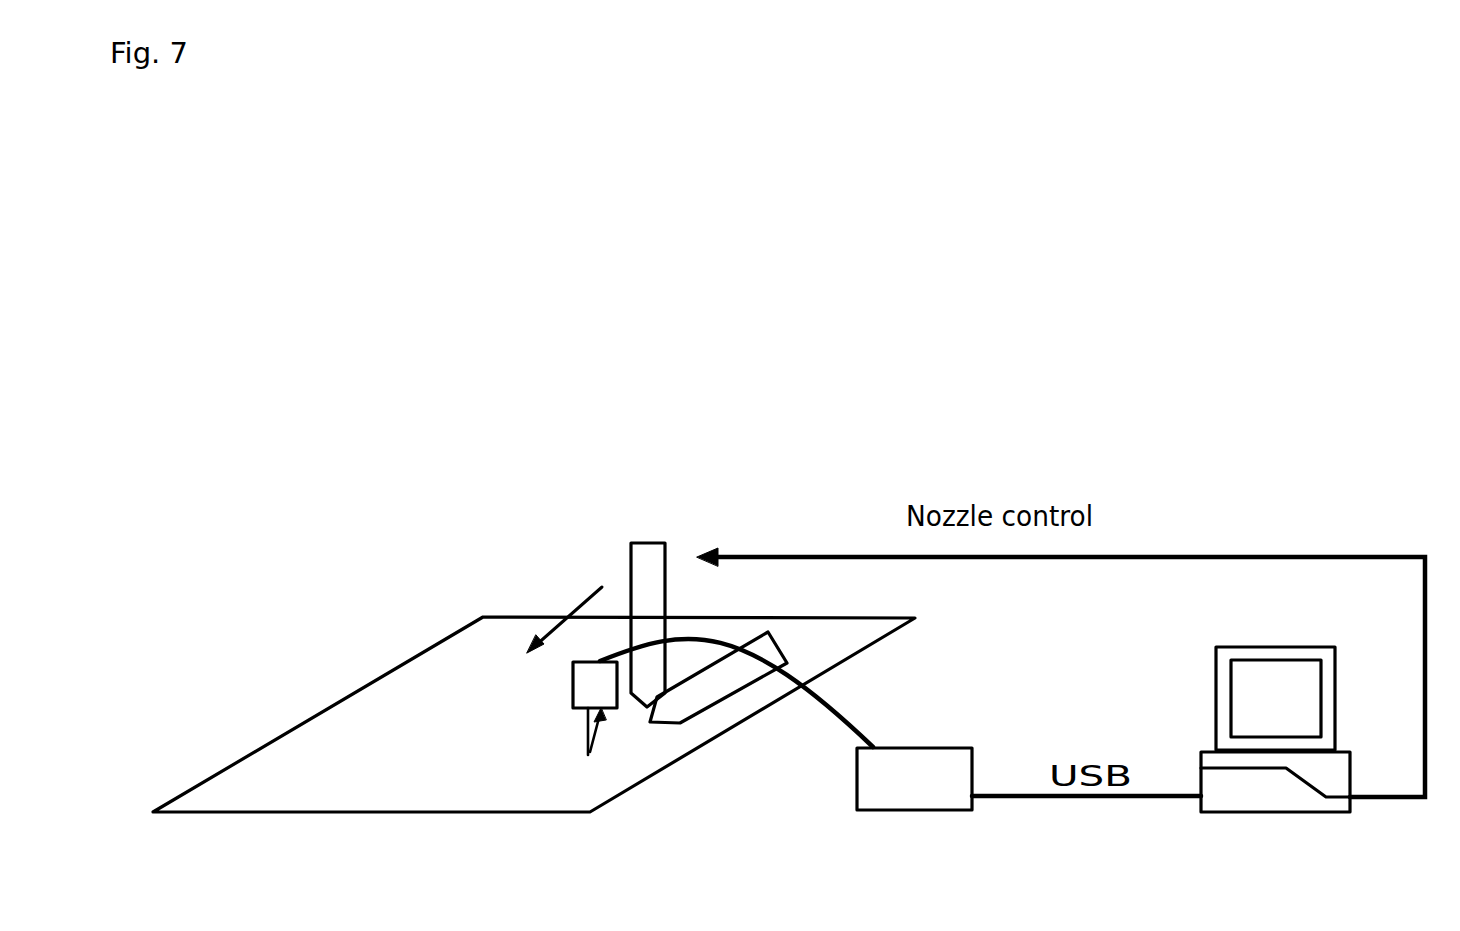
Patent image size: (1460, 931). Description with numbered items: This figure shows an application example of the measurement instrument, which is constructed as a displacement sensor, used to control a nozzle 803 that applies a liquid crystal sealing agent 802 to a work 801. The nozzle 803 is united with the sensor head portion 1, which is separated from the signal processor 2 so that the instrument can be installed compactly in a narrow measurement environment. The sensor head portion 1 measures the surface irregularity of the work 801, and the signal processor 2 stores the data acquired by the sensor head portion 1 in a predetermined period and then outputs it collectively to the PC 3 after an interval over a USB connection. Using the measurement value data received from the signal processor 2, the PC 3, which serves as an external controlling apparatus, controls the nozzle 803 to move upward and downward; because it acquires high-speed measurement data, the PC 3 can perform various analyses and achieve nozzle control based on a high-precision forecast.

The sensor head portion 1 is at (572, 681).
The signal processor 2 is at (946, 748).
The PC 3 is at (1334, 678).
The work 801 is at (295, 757).
The liquid crystal sealing agent 802 is at (740, 680).
The nozzle 803 is at (667, 553).